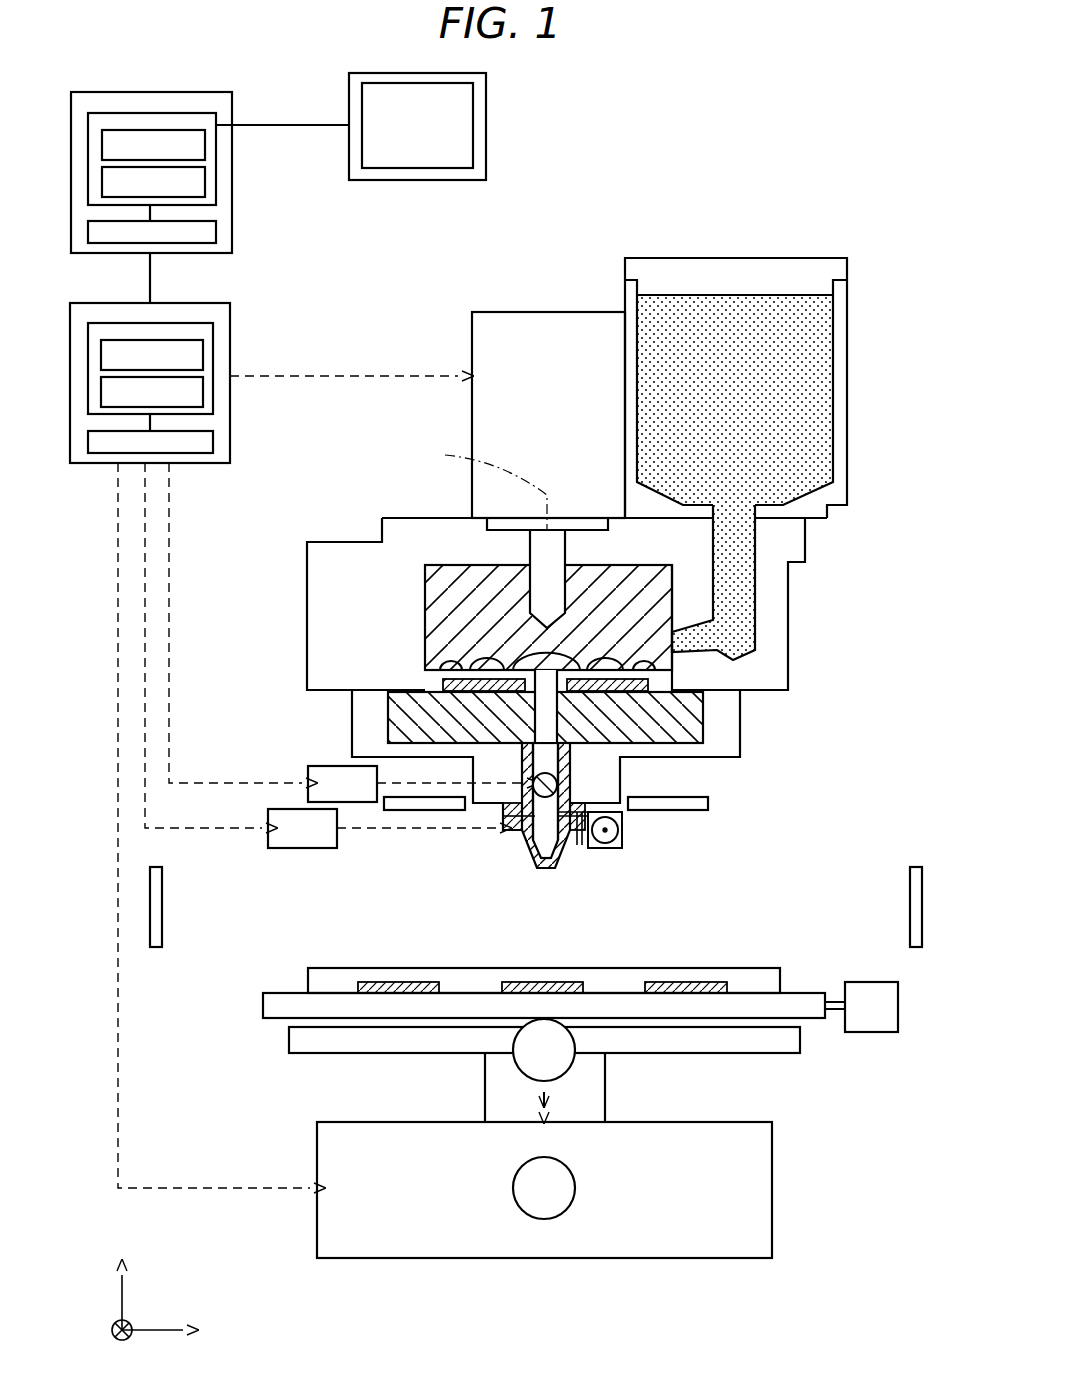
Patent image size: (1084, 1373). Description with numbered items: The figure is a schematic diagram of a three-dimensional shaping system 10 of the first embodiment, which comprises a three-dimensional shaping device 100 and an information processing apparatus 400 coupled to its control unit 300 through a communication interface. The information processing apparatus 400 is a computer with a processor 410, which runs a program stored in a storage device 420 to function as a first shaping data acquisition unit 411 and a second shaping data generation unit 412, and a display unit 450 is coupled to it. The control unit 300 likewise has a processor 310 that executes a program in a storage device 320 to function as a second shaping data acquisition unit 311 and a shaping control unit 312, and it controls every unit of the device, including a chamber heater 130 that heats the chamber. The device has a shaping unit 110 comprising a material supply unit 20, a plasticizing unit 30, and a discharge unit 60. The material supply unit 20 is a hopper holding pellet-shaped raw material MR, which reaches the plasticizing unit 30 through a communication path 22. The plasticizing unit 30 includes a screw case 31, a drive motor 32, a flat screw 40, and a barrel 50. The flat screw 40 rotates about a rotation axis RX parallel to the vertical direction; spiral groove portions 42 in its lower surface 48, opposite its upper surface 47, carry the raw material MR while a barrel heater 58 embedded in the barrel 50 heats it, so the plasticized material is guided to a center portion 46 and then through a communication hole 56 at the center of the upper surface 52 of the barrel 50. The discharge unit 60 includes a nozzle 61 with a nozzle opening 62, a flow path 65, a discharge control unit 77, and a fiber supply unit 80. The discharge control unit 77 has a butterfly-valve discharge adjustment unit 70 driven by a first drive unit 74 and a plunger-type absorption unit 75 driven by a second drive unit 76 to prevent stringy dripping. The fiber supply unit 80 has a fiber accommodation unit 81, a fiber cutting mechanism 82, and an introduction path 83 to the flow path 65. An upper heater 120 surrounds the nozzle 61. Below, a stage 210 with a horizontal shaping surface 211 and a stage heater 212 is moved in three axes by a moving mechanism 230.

The three-dimensional shaping system 10 is at (835, 125).
The material supply unit 20 is at (847, 380).
The communication path 22 is at (735, 582).
The plasticizing unit 30 is at (385, 448).
The screw case 31 is at (432, 518).
The drive motor 32 is at (472, 345).
The flat screw 40 is at (426, 590).
The groove portions 42 is at (520, 640).
The center portion 46 is at (445, 655).
The upper surface 47 is at (450, 565).
The lower surface 48 is at (440, 700).
The barrel 50 is at (397, 730).
The upper surface 52 is at (430, 660).
The communication hole 56 is at (560, 742).
The barrel heater 58 is at (655, 722).
The discharge unit 60 is at (690, 820).
The nozzle 61 is at (528, 880).
The nozzle opening 62 is at (548, 870).
The flow path 65 is at (560, 752).
The discharge adjustment unit 70 is at (522, 858).
The first drive unit 74 is at (308, 775).
The absorption unit 75 is at (503, 835).
The second drive unit 76 is at (285, 848).
The discharge control unit 77 is at (414, 855).
The fiber supply unit 80 is at (700, 843).
The fiber accommodation unit 81 is at (622, 835).
The fiber cutting mechanism 82 is at (582, 845).
The introduction path 83 is at (575, 835).
The three-dimensional shaping device 100 is at (732, 232).
The shaping unit 110 is at (423, 305).
The upper heater 120 is at (420, 812).
The chamber heater 130 is at (163, 915).
The stage 210 is at (725, 975).
The shaping surface 211 is at (640, 968).
The stage heater 212 is at (368, 980).
The moving mechanism 230 is at (825, 1100).
The control unit 300 is at (203, 303).
The processor 310 is at (213, 338).
The second shaping data acquisition unit 311 is at (203, 353).
The shaping control unit 312 is at (203, 390).
The storage device 320 is at (213, 440).
The information processing apparatus 400 is at (203, 92).
The processor 410 is at (217, 120).
The first shaping data acquisition unit 411 is at (205, 143).
The second shaping data generation unit 412 is at (205, 180).
The storage device 420 is at (216, 230).
The display unit 450 is at (486, 103).
The raw material MR is at (810, 345).
The rotation axis RX is at (476, 534).